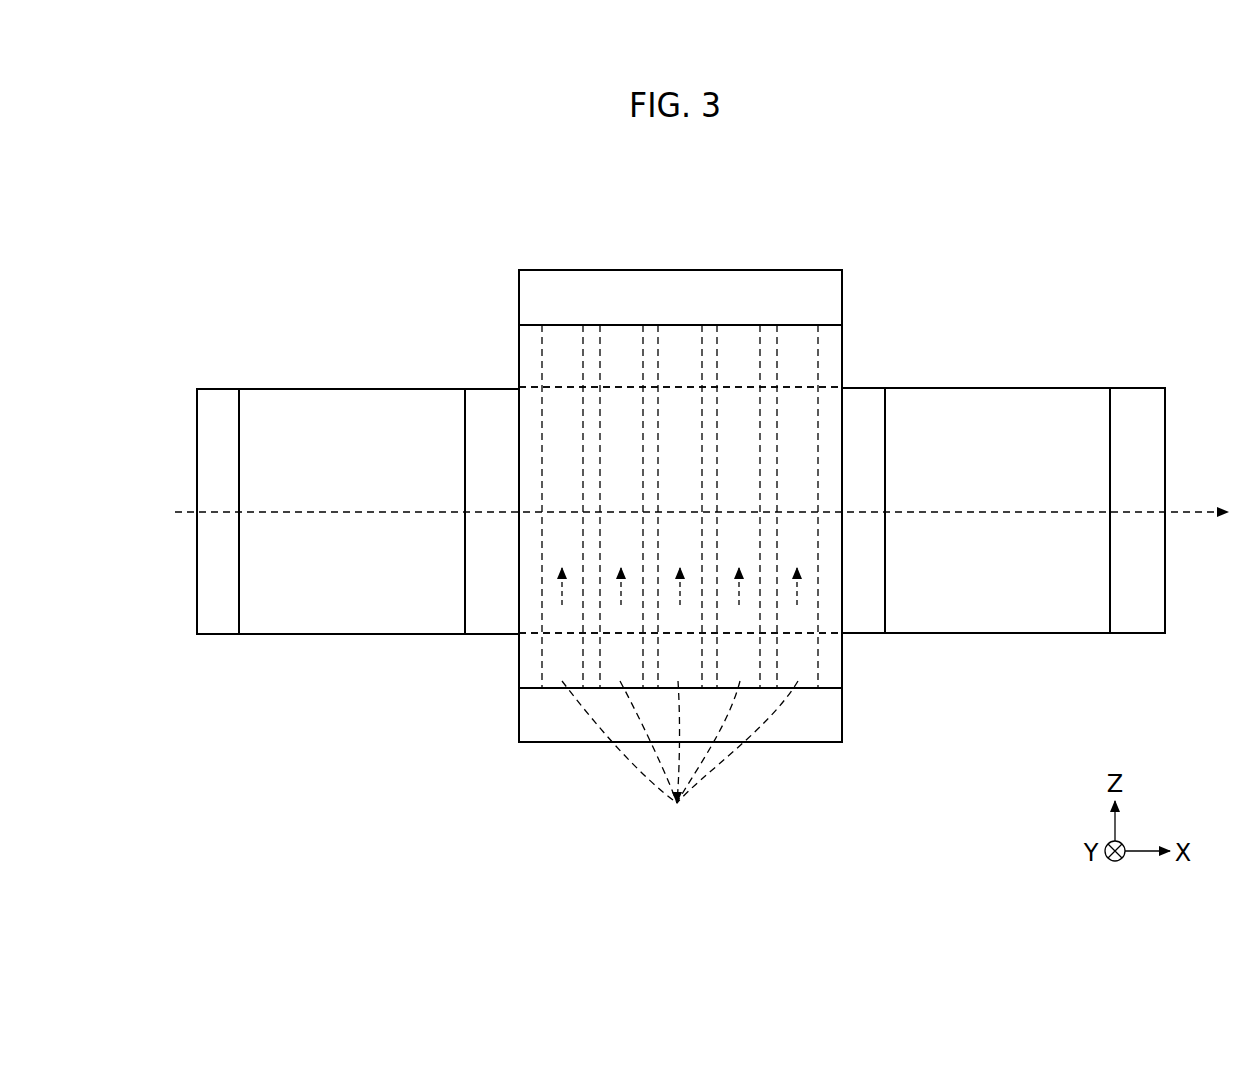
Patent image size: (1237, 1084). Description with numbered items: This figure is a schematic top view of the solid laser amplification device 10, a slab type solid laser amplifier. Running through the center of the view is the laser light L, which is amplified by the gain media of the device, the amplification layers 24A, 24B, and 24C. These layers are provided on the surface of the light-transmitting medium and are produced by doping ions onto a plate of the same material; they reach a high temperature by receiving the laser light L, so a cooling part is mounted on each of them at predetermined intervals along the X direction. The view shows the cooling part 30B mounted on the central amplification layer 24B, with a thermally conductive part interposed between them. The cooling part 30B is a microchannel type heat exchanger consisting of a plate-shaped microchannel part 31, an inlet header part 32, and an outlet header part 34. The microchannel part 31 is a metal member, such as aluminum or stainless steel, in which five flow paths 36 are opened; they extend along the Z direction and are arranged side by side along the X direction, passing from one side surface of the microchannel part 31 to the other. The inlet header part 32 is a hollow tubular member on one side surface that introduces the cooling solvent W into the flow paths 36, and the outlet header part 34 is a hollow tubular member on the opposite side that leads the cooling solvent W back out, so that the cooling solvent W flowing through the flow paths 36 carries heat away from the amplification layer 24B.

The solid laser amplification device 10 is at (681, 565).
The amplification layer 24A is at (350, 619).
The amplification layer 24B is at (799, 405).
The amplification layer 24C is at (1025, 618).
The cooling part 30B is at (643, 471).
The microchannel part 31 is at (528, 662).
The inlet header part 32 is at (528, 710).
The outlet header part 34 is at (806, 289).
The flow paths 36 is at (680, 759).
The laser light L is at (1192, 503).
The cooling solvent W is at (679, 571).